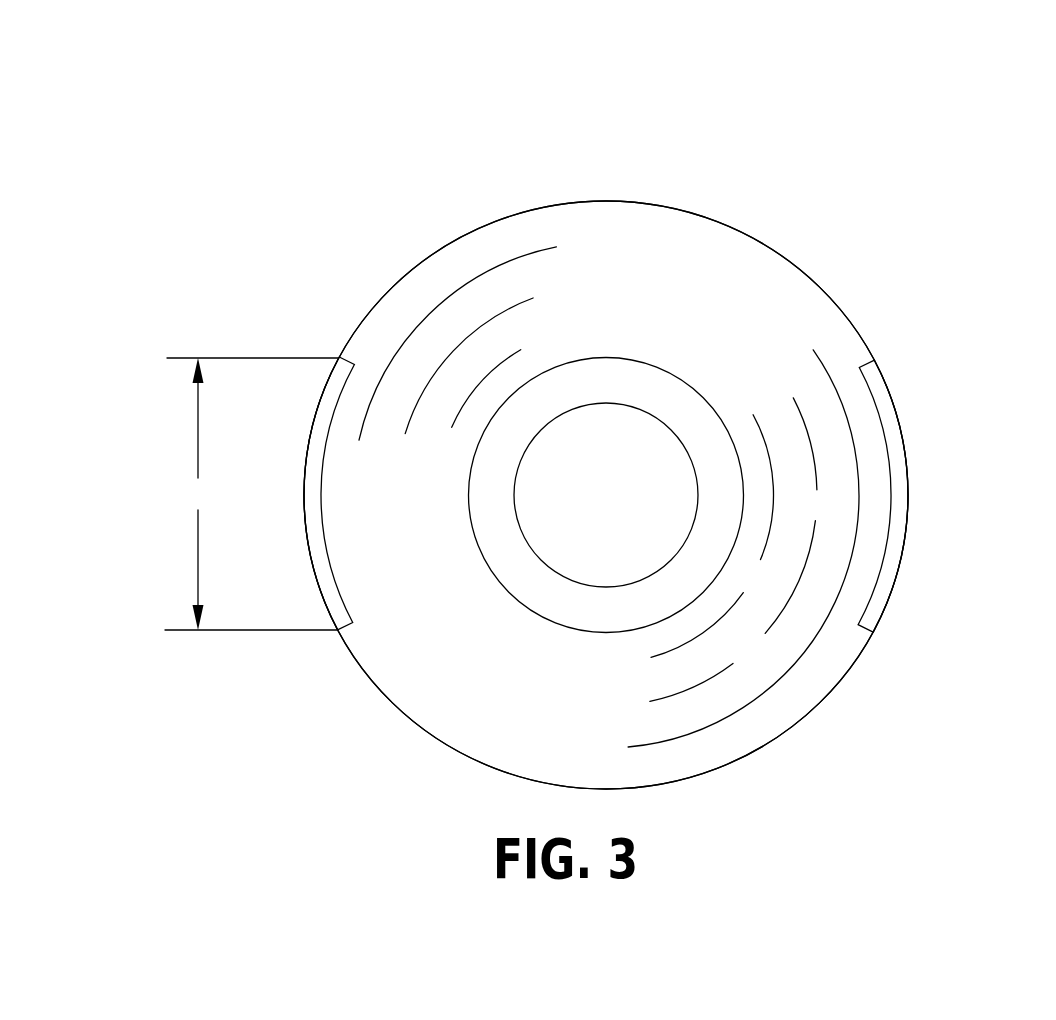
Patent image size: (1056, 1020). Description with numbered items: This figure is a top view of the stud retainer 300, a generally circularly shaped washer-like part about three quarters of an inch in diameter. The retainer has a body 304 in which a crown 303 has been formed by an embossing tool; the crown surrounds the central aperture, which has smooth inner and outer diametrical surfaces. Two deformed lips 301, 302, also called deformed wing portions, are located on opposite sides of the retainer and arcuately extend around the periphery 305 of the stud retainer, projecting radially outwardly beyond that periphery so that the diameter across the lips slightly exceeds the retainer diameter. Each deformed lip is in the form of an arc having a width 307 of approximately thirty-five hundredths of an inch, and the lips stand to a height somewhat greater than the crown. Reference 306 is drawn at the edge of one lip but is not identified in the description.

The stud retainer 300 is at (488, 185).
The deformed lip 301 is at (340, 375).
The deformed lip 302 is at (885, 408).
The crown 303 is at (677, 407).
The body 304 is at (643, 288).
The periphery 305 is at (570, 202).
The tab edge 306 is at (888, 605).
The width 307 is at (251, 494).